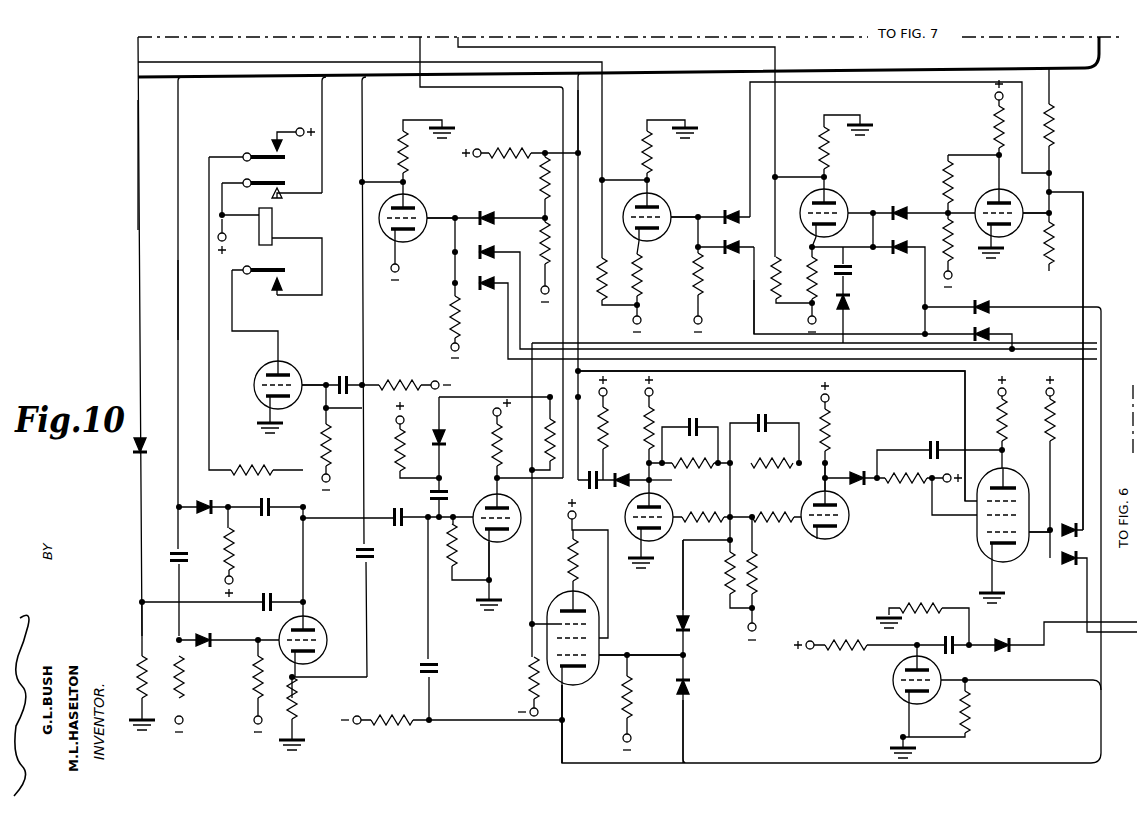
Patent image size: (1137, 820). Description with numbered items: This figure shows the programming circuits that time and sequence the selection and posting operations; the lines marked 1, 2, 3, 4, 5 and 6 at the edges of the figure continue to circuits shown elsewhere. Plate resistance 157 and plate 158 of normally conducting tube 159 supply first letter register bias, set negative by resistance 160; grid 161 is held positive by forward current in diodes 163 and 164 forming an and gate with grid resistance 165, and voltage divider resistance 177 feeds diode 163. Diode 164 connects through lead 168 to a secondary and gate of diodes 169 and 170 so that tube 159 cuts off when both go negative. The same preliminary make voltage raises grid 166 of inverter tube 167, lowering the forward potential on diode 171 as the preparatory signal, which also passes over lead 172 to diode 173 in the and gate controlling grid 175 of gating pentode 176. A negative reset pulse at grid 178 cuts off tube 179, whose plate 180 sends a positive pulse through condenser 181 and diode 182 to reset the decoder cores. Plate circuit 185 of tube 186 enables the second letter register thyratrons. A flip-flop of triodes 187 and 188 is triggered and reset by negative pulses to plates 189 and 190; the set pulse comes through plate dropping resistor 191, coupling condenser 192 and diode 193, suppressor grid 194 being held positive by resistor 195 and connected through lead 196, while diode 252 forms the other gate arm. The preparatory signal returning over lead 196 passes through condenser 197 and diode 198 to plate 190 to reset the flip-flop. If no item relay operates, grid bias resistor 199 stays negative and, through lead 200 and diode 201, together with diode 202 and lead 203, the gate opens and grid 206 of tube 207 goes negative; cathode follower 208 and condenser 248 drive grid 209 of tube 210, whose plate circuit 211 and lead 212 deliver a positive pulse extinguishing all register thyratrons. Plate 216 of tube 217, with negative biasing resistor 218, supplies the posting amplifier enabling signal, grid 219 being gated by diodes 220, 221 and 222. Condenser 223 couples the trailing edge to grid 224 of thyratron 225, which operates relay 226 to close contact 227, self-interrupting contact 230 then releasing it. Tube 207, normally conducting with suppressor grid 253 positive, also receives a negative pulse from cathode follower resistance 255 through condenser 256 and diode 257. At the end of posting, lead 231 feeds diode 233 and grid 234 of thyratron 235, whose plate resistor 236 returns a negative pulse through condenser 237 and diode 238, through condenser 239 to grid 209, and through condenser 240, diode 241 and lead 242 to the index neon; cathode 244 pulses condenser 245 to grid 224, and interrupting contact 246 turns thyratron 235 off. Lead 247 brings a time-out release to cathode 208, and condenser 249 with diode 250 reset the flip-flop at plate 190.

The polar relay 1 is at (735, 389).
The conductor 2 is at (1074, 223).
The conductor 3 is at (839, 210).
The conductor 4 is at (711, 219).
The sequence switch point 5 is at (439, 422).
The tongue 6 is at (419, 422).
The plate resistance 157 is at (655, 152).
The plate 158 is at (654, 182).
The tube 159 is at (652, 246).
The resistance 160 is at (590, 280).
The grid 161 is at (680, 216).
The diode 163 is at (730, 209).
The diode 164 is at (741, 245).
The grid resistance 165 is at (706, 276).
The grid 166 is at (1032, 210).
The inverter tube 167 is at (1000, 242).
The lead 168 is at (994, 134).
The diode 169 is at (955, 188).
The diode 170 is at (942, 244).
The diode 171 is at (901, 204).
The lead 172 is at (1084, 256).
The diode 173 is at (1064, 520).
The grid 175 is at (1037, 542).
The gating pentode 176 is at (978, 548).
The voltage divider resistance 177 is at (1056, 124).
The grid 178 is at (960, 698).
The tube 179 is at (893, 690).
The plate 180 is at (918, 612).
The condenser 181 is at (958, 656).
The diode 182 is at (1002, 638).
The plate circuit 185 is at (828, 186).
The tube 186 is at (848, 206).
The triode 187 is at (805, 530).
The triode 188 is at (659, 548).
The plate 189 is at (824, 481).
The plate 190 is at (657, 482).
The plate dropping resistor 191 is at (1007, 424).
The coupling condenser 192 is at (933, 440).
The diode 193 is at (858, 470).
The suppressor grid 194 is at (965, 404).
The resistor 195 is at (517, 138).
The lead 196 is at (582, 124).
The condenser 197 is at (592, 502).
The diode 198 is at (622, 472).
The grid bias resistor 199 is at (724, 582).
The lead 200 is at (683, 597).
The diode 201 is at (690, 625).
The diode 202 is at (690, 688).
The lead 203 is at (690, 734).
The grid 206 is at (616, 655).
The tube 207 is at (580, 683).
The cathode follower 208 is at (456, 718).
The grid 209 is at (466, 514).
The tube 210 is at (502, 550).
The plate circuit 211 is at (499, 460).
The lead 212 is at (560, 312).
The plate 216 is at (410, 180).
The tube 217 is at (405, 248).
The negative biasing resistor 218 is at (403, 378).
The grid 219 is at (438, 215).
The diode 220 is at (489, 208).
The diode 221 is at (492, 248).
The diode 222 is at (487, 298).
The condenser 223 is at (343, 374).
The grid 224 is at (316, 383).
The thyratron 225 is at (266, 368).
The relay 226 is at (274, 220).
The contact 227 is at (277, 181).
The self-interrupting contact 230 is at (273, 270).
The lead 231 is at (179, 307).
The diode 233 is at (205, 636).
The grid 234 is at (271, 642).
The thyratron 235 is at (328, 648).
The plate resistor 236 is at (250, 466).
The condenser 237 is at (272, 502).
The diode 238 is at (202, 500).
The condenser 239 is at (402, 508).
The condenser 240 is at (267, 592).
The diode 241 is at (146, 438).
The lead 242 is at (139, 172).
The cathode 244 is at (300, 710).
The condenser 245 is at (368, 562).
The interrupting contact 246 is at (265, 157).
The lead 247 is at (566, 752).
The condenser 248 is at (446, 665).
The condenser 249 is at (446, 486).
The diode 250 is at (447, 444).
The diode 252 is at (1068, 570).
The suppressor grid 253 is at (550, 624).
The cathode follower resistance 255 is at (810, 250).
The condenser 256 is at (876, 247).
The diode 257 is at (846, 310).